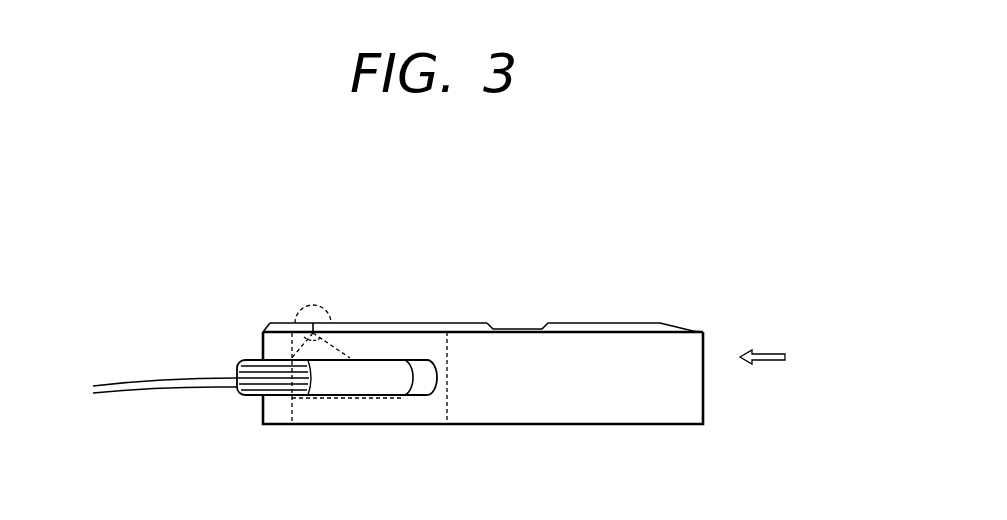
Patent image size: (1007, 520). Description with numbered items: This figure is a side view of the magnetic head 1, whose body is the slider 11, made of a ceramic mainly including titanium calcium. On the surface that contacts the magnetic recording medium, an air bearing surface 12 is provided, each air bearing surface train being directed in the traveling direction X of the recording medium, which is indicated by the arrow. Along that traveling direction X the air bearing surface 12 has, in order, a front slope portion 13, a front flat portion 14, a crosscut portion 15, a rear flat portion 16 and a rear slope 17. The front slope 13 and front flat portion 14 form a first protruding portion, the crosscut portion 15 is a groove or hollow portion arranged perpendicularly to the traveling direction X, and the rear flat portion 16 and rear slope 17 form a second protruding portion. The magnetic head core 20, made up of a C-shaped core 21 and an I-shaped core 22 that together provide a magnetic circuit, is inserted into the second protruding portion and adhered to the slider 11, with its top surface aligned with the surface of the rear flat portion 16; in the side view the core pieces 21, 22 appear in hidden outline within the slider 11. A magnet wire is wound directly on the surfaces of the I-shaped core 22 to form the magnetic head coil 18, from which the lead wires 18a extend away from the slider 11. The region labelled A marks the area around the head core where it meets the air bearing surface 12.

The connector device 1 is at (597, 188).
The slider 11 is at (668, 415).
The air bearing surface 12 is at (620, 326).
The front slope portion 13 is at (680, 325).
The front flat portion 14 is at (577, 322).
The crosscut portion 15 is at (520, 328).
The rear flat portion 16 is at (415, 323).
The rear slope 17 is at (262, 323).
The magnetic head coil 18 is at (257, 395).
The cable 18a is at (148, 378).
The magnetic head core 20 is at (340, 415).
The C-shaped core 21 is at (412, 415).
The I-shaped core 22 is at (285, 415).
The region A is at (313, 305).
The traveling direction X is at (776, 357).